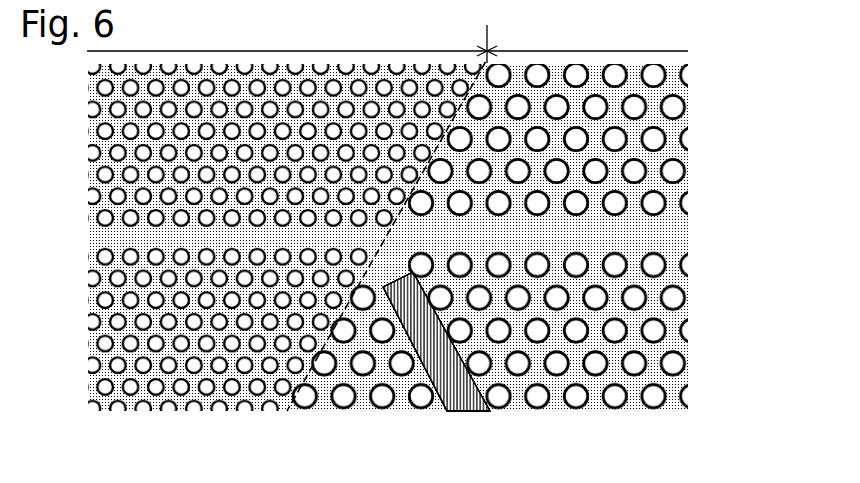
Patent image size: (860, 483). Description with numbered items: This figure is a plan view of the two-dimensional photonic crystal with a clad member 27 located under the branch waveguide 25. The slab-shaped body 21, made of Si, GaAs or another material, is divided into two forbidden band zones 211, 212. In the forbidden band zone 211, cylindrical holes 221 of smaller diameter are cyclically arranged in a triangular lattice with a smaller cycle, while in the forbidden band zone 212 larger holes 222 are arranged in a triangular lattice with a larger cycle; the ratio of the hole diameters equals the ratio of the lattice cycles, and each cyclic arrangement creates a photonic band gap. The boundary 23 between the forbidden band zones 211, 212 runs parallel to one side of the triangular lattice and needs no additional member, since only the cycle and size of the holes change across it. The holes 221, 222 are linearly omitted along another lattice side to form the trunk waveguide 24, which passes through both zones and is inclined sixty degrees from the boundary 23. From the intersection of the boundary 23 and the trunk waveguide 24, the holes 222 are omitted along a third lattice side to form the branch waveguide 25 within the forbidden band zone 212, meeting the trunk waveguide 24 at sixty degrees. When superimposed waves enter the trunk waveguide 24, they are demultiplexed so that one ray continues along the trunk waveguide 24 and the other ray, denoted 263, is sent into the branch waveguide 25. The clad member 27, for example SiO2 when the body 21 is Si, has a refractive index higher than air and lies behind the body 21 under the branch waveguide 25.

The body 21 is at (670, 132).
The forbidden band zone 211 is at (287, 39).
The forbidden band zone 212 is at (587, 39).
The holes 221 is at (118, 150).
The holes 222 is at (670, 170).
The boundary 23 is at (307, 368).
The trunk waveguide 24 is at (645, 227).
The branch waveguide 25 is at (463, 363).
The ray into the branch waveguide 263 is at (452, 359).
The clad member 27 is at (565, 371).